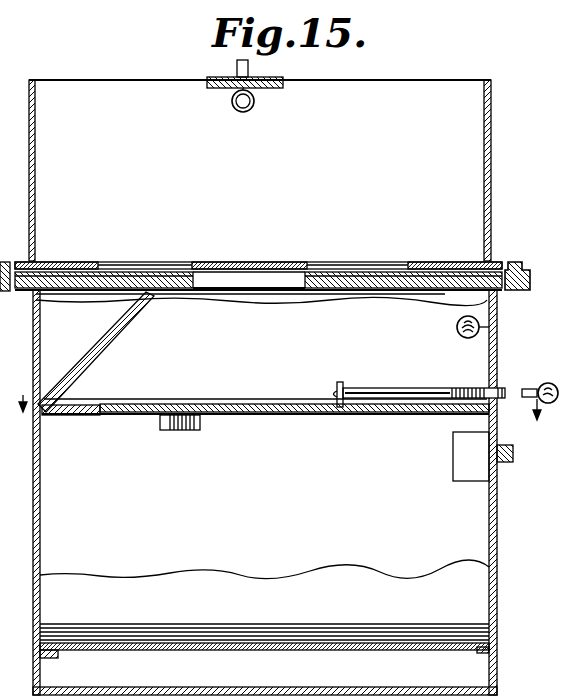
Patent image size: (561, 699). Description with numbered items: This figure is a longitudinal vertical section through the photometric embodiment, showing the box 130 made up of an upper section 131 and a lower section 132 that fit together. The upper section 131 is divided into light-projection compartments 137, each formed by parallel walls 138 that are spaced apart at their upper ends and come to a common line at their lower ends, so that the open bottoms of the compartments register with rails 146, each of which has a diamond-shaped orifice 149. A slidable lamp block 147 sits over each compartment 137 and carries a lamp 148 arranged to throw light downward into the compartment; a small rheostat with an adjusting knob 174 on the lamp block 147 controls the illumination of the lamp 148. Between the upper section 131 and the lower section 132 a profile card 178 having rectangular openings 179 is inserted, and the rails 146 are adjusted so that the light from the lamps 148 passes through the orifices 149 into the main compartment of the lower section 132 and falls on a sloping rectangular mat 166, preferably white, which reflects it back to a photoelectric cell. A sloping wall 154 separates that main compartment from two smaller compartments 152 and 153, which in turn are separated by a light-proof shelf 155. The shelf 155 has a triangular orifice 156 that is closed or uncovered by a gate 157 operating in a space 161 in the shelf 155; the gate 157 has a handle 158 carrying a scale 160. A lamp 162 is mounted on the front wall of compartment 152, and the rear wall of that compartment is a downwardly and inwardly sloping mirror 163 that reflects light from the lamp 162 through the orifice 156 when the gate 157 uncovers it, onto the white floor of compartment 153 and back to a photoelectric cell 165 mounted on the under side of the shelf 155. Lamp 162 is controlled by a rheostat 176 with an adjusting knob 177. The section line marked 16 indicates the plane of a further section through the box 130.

The upper section 131 is at (70, 97).
The light-projection compartment 137 is at (143, 142).
The parallel walls 138 is at (204, 186).
The slidable lamp block 147 is at (217, 76).
The adjusting knob 174 is at (250, 63).
The lamp 148 is at (240, 108).
The rectangular openings 179 is at (148, 263).
The profile card 178 is at (278, 261).
The rail 146 is at (538, 247).
The diamond-shaped orifice 149 is at (293, 273).
The compartment 152 is at (261, 318).
The lower section 132 is at (478, 597).
The box 130 is at (494, 340).
The mirror 163 is at (122, 332).
The triangular orifice 156 is at (150, 412).
The gate 157 is at (289, 402).
The space 161 is at (92, 414).
The light-proof shelf 155 is at (394, 412).
The photoelectric cell 165 is at (202, 427).
The scale 160 is at (463, 388).
The handle 158 is at (543, 384).
The section line 16 is at (276, 418).
The lamp 162 is at (457, 320).
The rheostat 176 is at (467, 463).
The adjusting knob 177 is at (505, 463).
The compartment 153 is at (296, 490).
The sloping wall 154 is at (246, 576).
The sloping rectangular mat 166 is at (297, 628).